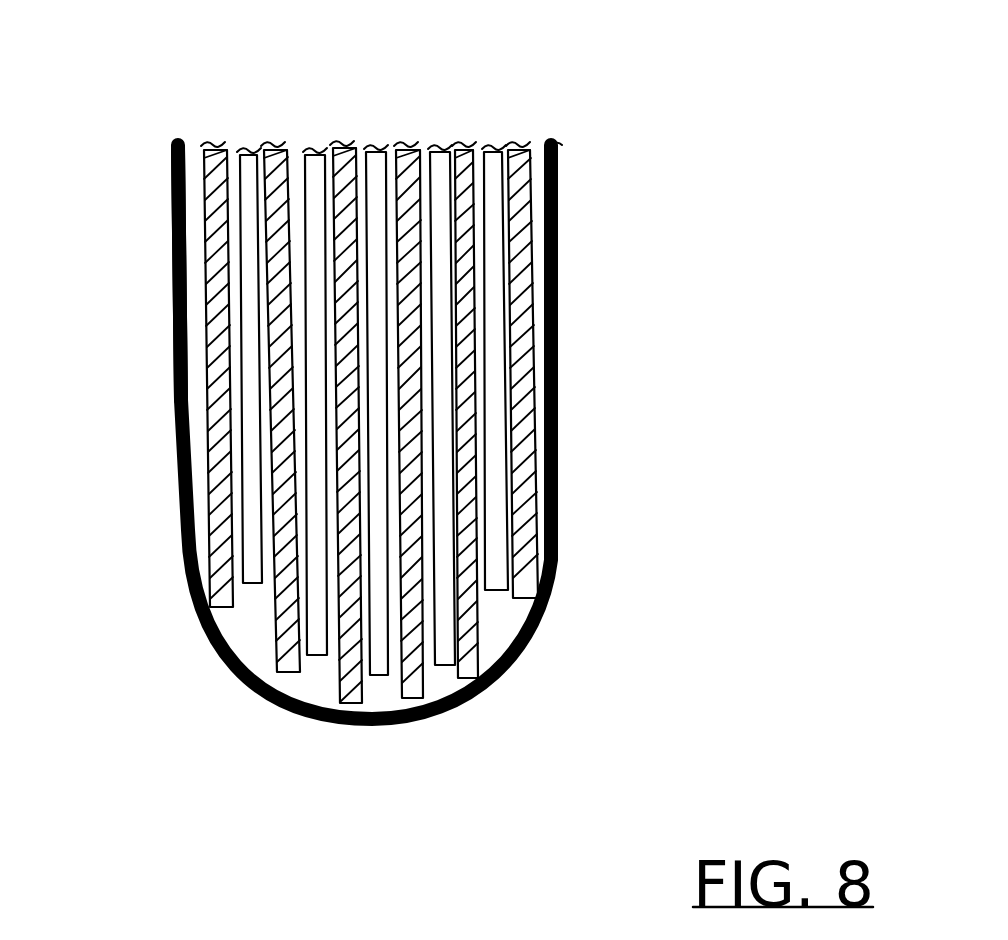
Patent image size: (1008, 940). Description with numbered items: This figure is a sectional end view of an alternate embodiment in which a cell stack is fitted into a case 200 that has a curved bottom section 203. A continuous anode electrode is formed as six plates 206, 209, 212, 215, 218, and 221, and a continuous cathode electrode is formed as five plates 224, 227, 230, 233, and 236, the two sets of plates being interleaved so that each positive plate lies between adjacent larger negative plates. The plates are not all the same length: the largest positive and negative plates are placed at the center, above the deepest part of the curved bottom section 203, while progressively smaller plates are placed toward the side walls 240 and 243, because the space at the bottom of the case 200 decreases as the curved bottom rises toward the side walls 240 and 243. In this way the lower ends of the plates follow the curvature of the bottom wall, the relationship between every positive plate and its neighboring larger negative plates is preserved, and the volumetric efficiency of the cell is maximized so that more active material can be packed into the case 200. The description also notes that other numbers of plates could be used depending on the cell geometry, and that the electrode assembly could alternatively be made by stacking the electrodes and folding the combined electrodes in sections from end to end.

The case 200 is at (674, 202).
The curved bottom section 203 is at (304, 730).
The anode electrode plate 206 is at (213, 242).
The anode electrode plate 209 is at (280, 372).
The anode electrode plate 212 is at (345, 490).
The anode electrode plate 215 is at (405, 555).
The anode electrode plate 218 is at (450, 430).
The anode electrode plate 221 is at (527, 340).
The cathode electrode plate 224 is at (255, 452).
The cathode electrode plate 227 is at (318, 598).
The cathode electrode plate 230 is at (382, 665).
The cathode electrode plate 233 is at (473, 697).
The cathode electrode plate 236 is at (498, 572).
The side wall 240 is at (182, 322).
The side wall 243 is at (557, 253).